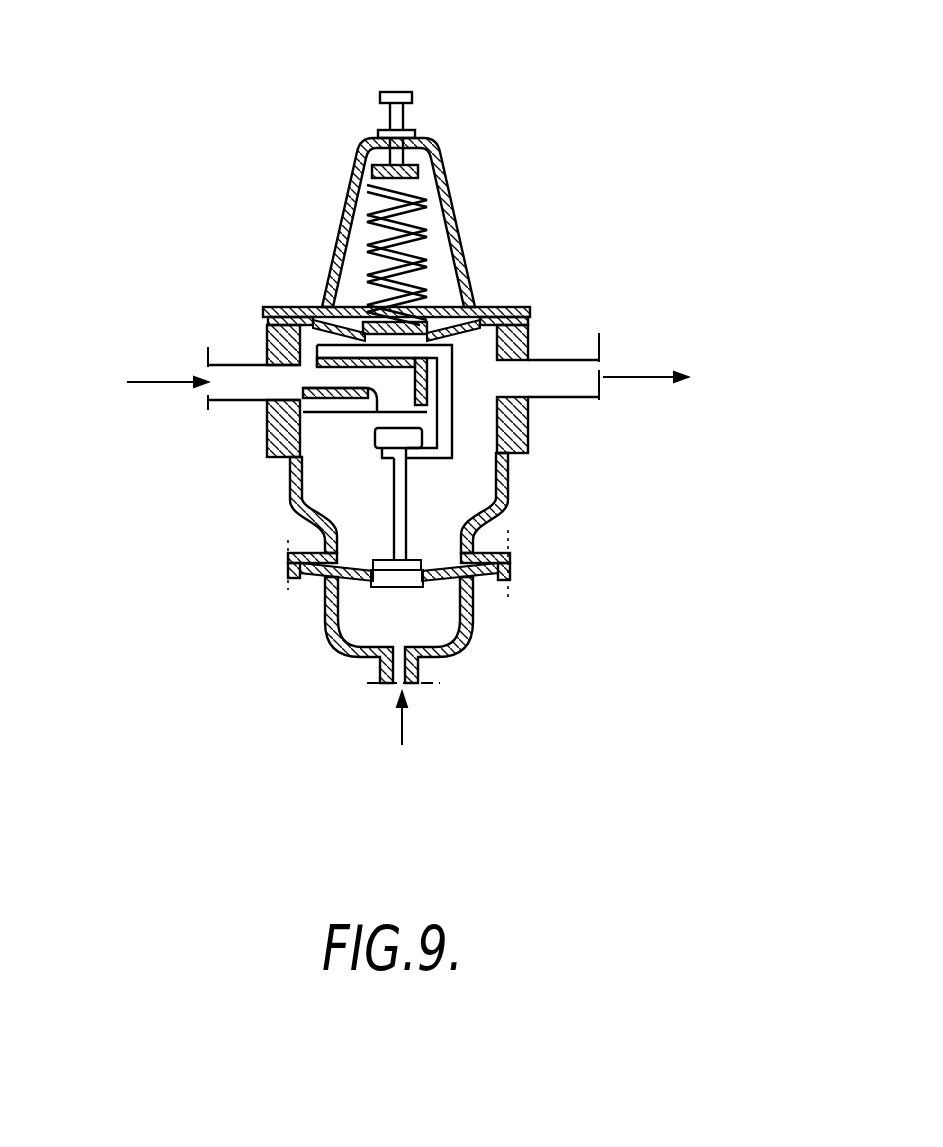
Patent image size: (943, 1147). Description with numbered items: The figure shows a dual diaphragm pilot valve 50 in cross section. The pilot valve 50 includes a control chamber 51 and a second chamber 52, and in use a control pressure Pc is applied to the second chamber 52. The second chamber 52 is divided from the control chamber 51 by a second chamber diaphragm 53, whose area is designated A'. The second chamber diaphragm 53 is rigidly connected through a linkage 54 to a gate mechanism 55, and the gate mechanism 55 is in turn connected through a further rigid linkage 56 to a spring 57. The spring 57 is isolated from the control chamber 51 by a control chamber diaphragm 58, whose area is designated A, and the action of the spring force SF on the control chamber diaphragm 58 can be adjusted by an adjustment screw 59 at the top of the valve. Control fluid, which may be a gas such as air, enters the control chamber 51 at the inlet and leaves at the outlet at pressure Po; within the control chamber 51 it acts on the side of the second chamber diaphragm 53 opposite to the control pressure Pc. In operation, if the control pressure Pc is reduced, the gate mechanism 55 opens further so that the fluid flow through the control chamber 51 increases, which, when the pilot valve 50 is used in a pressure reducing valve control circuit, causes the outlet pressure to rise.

The pilot valve 50 is at (282, 225).
The control chamber 51 is at (470, 493).
The second chamber 52 is at (373, 610).
The second chamber diaphragm 53 is at (716, 645).
The linkage 54 is at (394, 488).
The gate mechanism 55 is at (383, 438).
The further rigid linkage 56 is at (452, 428).
The spring 57 is at (427, 255).
The control chamber diaphragm 58 is at (455, 312).
The adjustment screw 59 is at (400, 90).